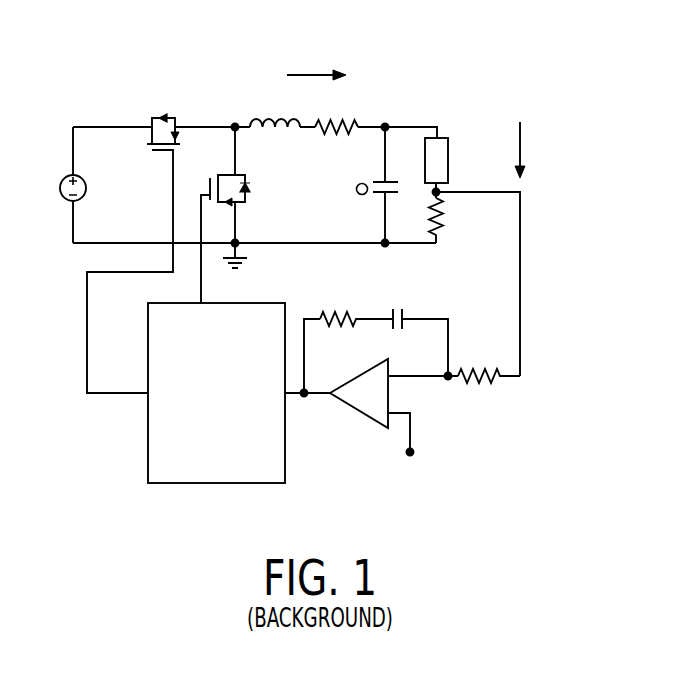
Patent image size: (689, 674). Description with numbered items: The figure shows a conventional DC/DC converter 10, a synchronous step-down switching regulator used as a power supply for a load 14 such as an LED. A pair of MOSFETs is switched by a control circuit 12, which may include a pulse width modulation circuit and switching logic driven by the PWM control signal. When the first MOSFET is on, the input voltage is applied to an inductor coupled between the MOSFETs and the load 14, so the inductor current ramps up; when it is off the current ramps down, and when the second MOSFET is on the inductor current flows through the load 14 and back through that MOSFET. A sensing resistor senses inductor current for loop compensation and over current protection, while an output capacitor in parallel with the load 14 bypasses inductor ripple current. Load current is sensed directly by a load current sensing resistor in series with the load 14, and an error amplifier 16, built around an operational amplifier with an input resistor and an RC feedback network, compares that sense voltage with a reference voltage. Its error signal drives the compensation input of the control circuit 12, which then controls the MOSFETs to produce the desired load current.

The DC/DC converter 10 is at (321, 244).
The control circuit 12 is at (206, 437).
The load 14 is at (438, 138).
The error amplifier 16 is at (359, 414).